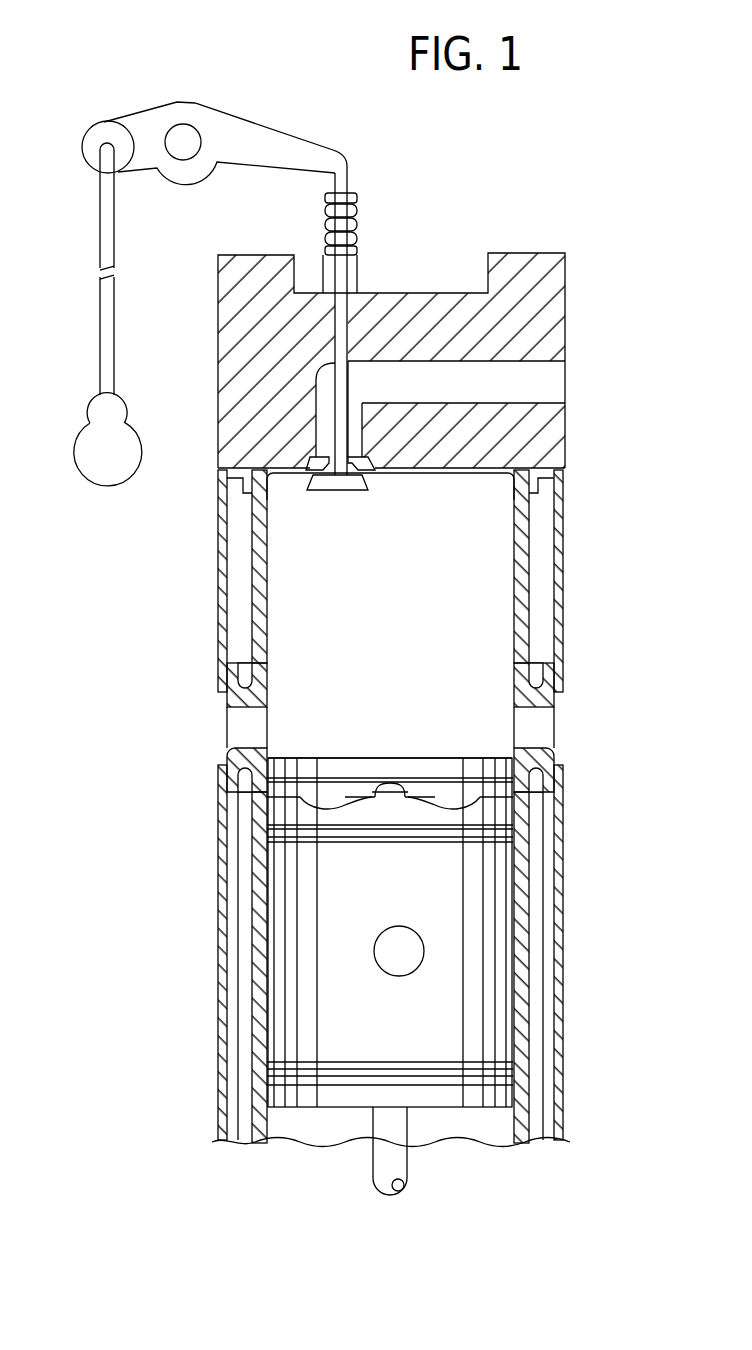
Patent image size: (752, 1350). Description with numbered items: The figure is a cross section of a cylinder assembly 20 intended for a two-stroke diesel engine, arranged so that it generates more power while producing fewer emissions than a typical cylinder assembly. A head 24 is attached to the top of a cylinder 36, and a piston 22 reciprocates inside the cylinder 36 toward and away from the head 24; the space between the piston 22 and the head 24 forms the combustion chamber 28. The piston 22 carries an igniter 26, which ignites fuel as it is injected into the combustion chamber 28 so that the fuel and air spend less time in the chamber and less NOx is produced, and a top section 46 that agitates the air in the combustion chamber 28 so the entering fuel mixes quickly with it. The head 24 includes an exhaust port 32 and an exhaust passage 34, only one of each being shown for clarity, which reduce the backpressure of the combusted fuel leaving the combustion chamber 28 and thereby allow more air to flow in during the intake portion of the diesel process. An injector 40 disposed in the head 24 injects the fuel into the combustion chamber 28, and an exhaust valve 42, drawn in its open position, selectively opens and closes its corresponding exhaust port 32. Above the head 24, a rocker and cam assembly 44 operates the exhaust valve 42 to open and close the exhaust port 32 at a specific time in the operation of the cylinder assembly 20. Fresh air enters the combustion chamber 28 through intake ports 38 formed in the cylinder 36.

The cylinder assembly 20 is at (141, 809).
The piston 22 is at (428, 894).
The head 24 is at (519, 222).
The igniter 26 is at (371, 751).
The combustion chamber 28 is at (428, 594).
The exhaust port 32 is at (332, 463).
The exhaust passage 34 is at (452, 360).
The cylinder 36 is at (566, 612).
The intake ports 38 is at (227, 716).
The injector 40 is at (388, 473).
The exhaust valve 42 is at (356, 490).
The rocker and cam assembly 44 is at (99, 79).
The top section 46 is at (484, 733).